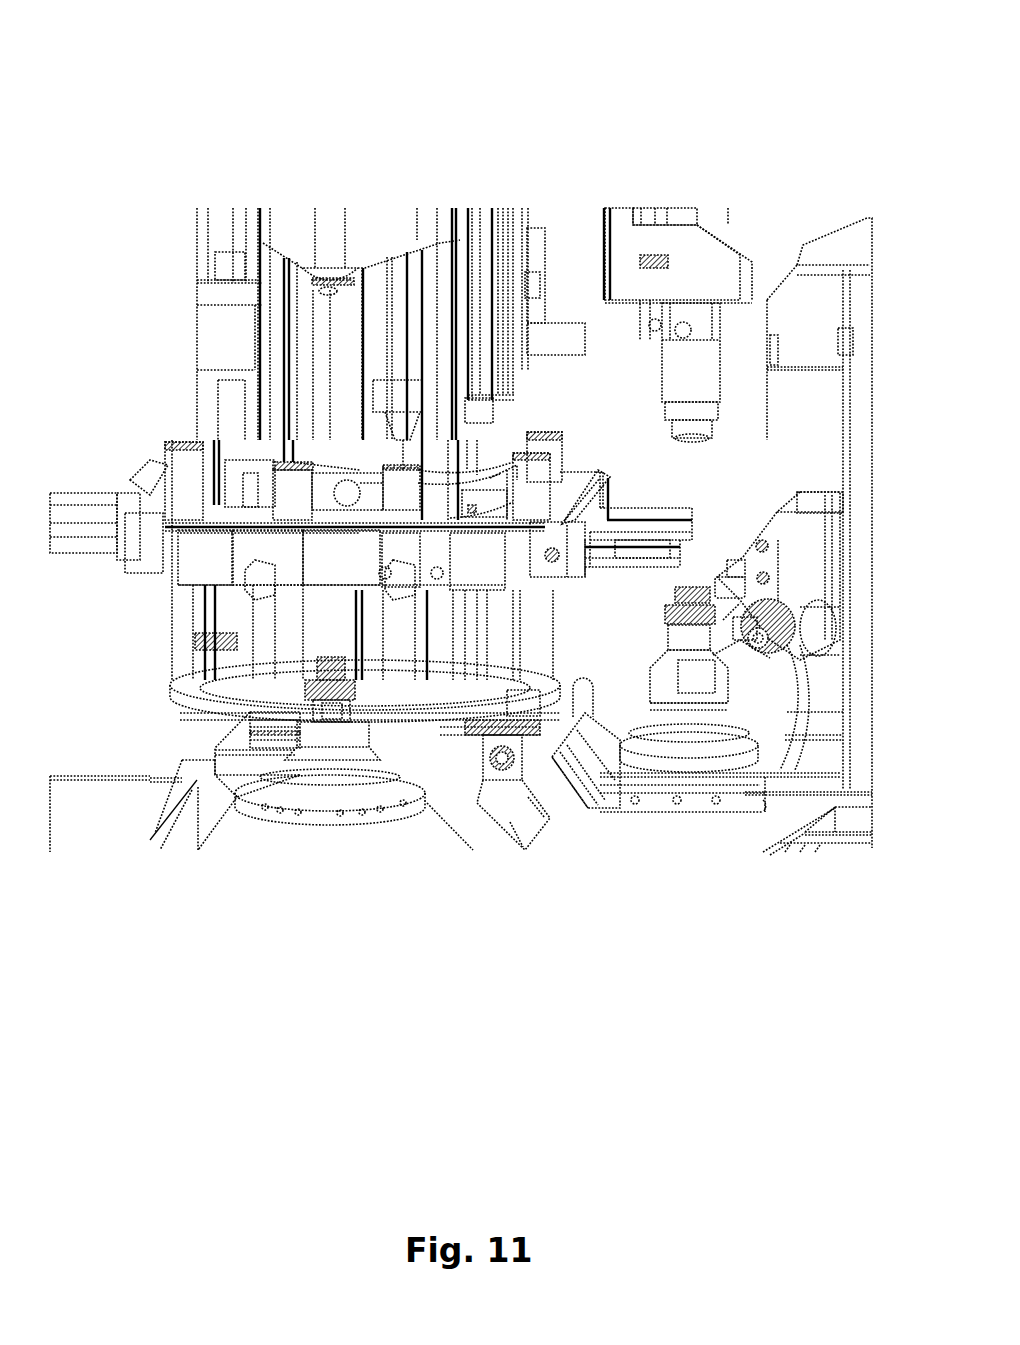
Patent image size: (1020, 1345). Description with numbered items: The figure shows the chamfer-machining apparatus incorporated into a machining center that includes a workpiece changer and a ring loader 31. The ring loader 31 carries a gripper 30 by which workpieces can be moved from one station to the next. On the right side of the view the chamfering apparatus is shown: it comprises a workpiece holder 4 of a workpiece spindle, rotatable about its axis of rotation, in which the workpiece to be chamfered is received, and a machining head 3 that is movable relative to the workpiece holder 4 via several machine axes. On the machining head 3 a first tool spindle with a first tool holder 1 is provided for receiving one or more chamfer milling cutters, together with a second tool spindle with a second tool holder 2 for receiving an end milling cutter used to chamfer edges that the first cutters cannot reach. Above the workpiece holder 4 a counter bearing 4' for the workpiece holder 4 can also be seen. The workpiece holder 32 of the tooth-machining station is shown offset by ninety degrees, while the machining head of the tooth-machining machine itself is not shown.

The tool holder 1 is at (770, 620).
The tool holder 2 is at (710, 585).
The machining head 3 is at (791, 525).
The workpiece holder 4 is at (683, 834).
The counter bearing 4' is at (611, 244).
The gripper 30 is at (640, 553).
The ring loader 31 is at (453, 692).
The workpiece holder 32 is at (325, 718).